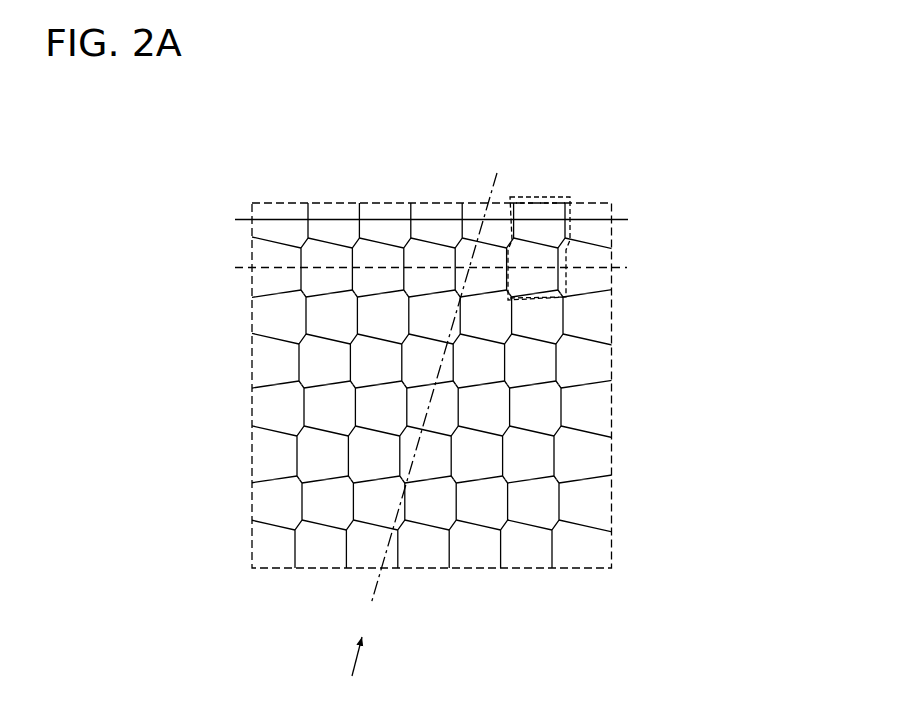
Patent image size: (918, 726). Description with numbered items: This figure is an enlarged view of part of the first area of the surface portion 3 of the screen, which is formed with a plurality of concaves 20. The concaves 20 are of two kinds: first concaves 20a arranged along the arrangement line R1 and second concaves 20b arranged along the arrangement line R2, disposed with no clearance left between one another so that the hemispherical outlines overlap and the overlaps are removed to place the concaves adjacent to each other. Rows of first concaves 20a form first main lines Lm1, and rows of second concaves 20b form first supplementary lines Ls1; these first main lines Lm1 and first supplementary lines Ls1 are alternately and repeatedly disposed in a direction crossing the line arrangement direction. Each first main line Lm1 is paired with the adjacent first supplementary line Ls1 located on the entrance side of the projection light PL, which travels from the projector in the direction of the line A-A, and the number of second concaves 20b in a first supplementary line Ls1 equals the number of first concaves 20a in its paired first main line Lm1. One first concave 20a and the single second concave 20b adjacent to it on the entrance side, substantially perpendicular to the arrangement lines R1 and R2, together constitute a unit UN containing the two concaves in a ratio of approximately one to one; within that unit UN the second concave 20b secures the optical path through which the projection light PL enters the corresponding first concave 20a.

The surface portion 3 is at (641, 120).
The concaves 20 is at (508, 378).
The first concaves 20a is at (595, 208).
The second concaves 20b is at (590, 253).
The first main lines Lm1 is at (217, 205).
The first supplementary lines Ls1 is at (217, 262).
The unit UN is at (531, 197).
The arrangement line R1 is at (547, 218).
The arrangement line R2 is at (592, 270).
The line A- A is at (431, 387).
The projection light PL is at (355, 663).